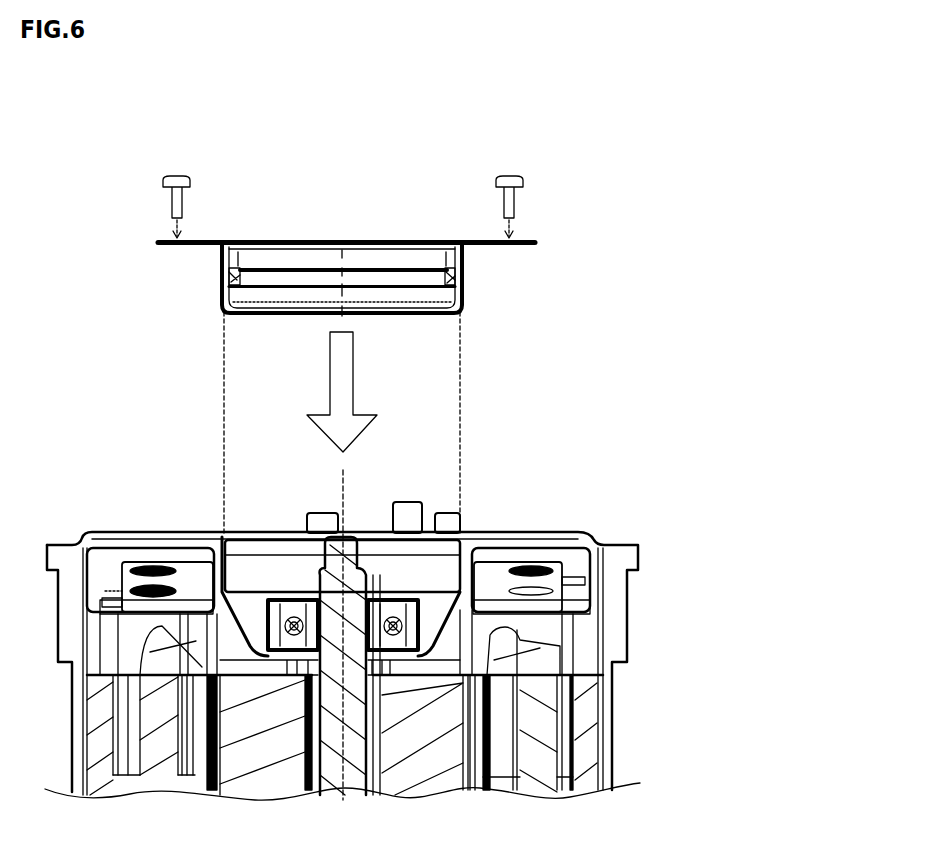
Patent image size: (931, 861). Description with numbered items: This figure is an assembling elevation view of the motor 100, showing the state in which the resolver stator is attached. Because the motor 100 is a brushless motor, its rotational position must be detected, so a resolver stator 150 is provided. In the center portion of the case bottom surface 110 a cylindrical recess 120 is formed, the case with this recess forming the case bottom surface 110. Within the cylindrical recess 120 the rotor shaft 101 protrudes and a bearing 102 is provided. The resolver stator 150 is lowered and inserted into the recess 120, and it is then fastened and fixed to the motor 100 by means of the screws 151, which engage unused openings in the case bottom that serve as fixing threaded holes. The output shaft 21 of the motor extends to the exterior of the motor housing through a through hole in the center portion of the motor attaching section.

The resolver stator 150 is at (600, 230).
The screws 151 is at (191, 180).
The motor 100 is at (598, 468).
The output shaft 21 is at (616, 545).
The case bottom surface 110 is at (531, 545).
The cylindrical recess 120 is at (425, 568).
The rotor shaft 101 is at (346, 548).
The bearing 102 is at (290, 612).